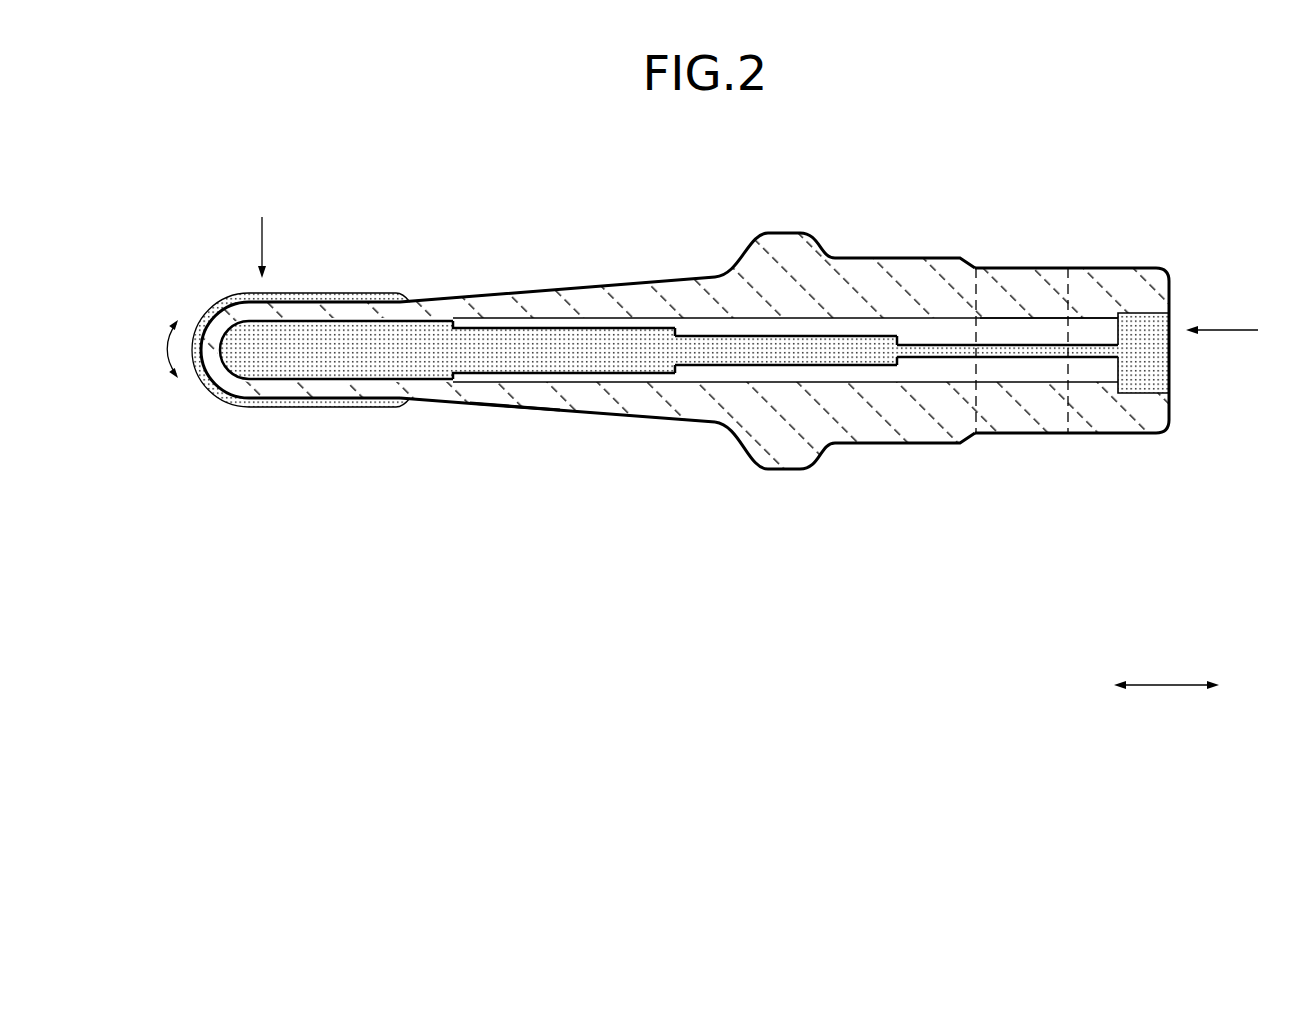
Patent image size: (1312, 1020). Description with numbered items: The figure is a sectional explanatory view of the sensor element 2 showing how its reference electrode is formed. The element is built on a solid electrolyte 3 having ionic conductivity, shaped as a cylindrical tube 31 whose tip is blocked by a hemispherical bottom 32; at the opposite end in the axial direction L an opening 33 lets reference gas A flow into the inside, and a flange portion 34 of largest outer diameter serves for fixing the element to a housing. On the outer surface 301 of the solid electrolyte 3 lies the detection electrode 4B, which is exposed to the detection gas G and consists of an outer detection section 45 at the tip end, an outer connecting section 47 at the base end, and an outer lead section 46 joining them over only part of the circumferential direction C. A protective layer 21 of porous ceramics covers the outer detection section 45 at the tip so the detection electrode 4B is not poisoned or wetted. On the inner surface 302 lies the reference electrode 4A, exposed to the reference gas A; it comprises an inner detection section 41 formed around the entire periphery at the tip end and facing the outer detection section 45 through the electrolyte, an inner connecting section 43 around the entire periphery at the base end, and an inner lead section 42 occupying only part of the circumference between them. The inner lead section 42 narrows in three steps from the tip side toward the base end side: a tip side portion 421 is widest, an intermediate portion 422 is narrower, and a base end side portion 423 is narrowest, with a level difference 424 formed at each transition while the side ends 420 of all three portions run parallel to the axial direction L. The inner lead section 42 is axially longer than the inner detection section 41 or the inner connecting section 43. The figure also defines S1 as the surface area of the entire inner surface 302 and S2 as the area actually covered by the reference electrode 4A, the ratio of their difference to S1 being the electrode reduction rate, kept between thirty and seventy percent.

The sensor element 2 is at (708, 360).
The solid electrolyte 3 is at (708, 376).
The protective layer 21 is at (362, 293).
The tube 31 is at (572, 398).
The bottom 32 is at (212, 360).
The opening 33 is at (1169, 355).
The flange portion 34 is at (780, 456).
The outer surface 301 is at (1077, 268).
The inner surface 302 is at (1095, 384).
The inner detection section 41 is at (423, 320).
The inner lead section 42 is at (980, 183).
The side ends 420 is at (862, 367).
The tip side portion 421 is at (548, 352).
The intermediate portion 422 is at (755, 340).
The base end side portion 423 is at (925, 345).
The level difference 424 is at (678, 330).
The inner connecting section 43 is at (1134, 345).
The outer detection section 45 is at (300, 399).
The outer lead section 46 is at (692, 424).
The outer connecting section 47 is at (1022, 435).
The reference electrode 4A is at (496, 310).
The detection electrode 4B is at (502, 412).
The surface area of entire inner surface S1 is at (1040, 316).
The surface area of reference electrode region S2 is at (640, 352).
The detection gas G is at (249, 246).
The circumferential direction C is at (154, 349).
The reference gas A is at (1222, 316).
The axial direction L is at (1163, 674).